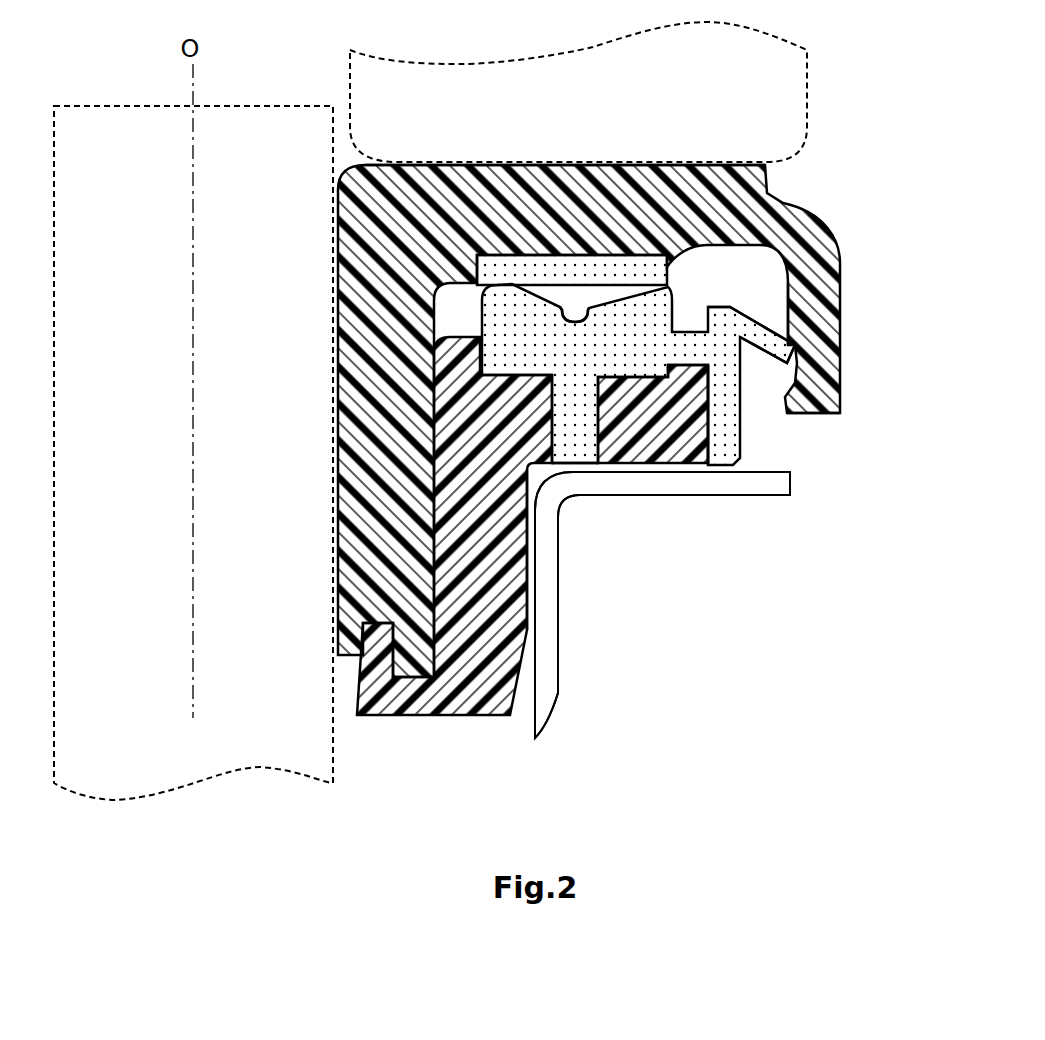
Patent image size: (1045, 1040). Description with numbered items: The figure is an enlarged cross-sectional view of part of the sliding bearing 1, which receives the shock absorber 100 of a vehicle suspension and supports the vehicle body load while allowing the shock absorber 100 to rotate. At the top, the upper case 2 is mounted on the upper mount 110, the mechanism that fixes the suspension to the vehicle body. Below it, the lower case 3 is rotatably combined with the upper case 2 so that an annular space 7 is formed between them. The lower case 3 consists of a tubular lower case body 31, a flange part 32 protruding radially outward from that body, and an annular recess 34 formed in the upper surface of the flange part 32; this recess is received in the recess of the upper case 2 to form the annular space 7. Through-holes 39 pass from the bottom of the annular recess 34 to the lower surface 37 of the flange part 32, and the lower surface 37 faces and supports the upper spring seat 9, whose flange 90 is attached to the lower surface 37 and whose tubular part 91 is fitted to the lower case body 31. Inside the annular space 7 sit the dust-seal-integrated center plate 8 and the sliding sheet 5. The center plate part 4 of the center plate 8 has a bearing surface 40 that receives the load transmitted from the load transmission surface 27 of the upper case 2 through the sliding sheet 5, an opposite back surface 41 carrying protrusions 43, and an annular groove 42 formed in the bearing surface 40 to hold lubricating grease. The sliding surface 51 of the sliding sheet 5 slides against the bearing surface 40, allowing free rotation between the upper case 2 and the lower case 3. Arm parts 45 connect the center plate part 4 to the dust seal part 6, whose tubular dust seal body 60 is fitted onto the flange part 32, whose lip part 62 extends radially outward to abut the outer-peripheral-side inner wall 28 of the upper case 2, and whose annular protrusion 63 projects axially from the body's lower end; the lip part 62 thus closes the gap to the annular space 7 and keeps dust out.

The sliding bearing 1 is at (905, 131).
The upper case 2 is at (516, 164).
The lower case 3 is at (518, 680).
The center plate part 4 is at (481, 322).
The sliding sheet 5 is at (683, 333).
The dust seal part 6 is at (740, 455).
The annular space 7 is at (783, 212).
The dust-seal-integrated center plate 8 is at (476, 257).
The upper spring seat 9 is at (571, 502).
The load transmission surface 27 is at (576, 290).
The outer-peripheral-side inner wall 28 is at (790, 287).
The lower case body 31 is at (530, 632).
The flange part 32 is at (792, 413).
The annular recess 34 is at (503, 320).
The lower surface 37 is at (630, 452).
The through-holes 39 is at (588, 465).
The bearing surface 40 is at (608, 300).
The back surface 41 is at (554, 467).
The annular groove 42 is at (596, 283).
The protrusions 43 is at (600, 437).
The arm parts 45 is at (752, 268).
The sliding surface 51 is at (596, 284).
The dust seal body 60 is at (737, 432).
The lip part 62 is at (787, 322).
The annular protrusion 63 is at (737, 496).
The flange 90 is at (717, 488).
The tubular part 91 is at (558, 667).
The shock absorber 100 is at (238, 105).
The upper mount 110 is at (812, 80).